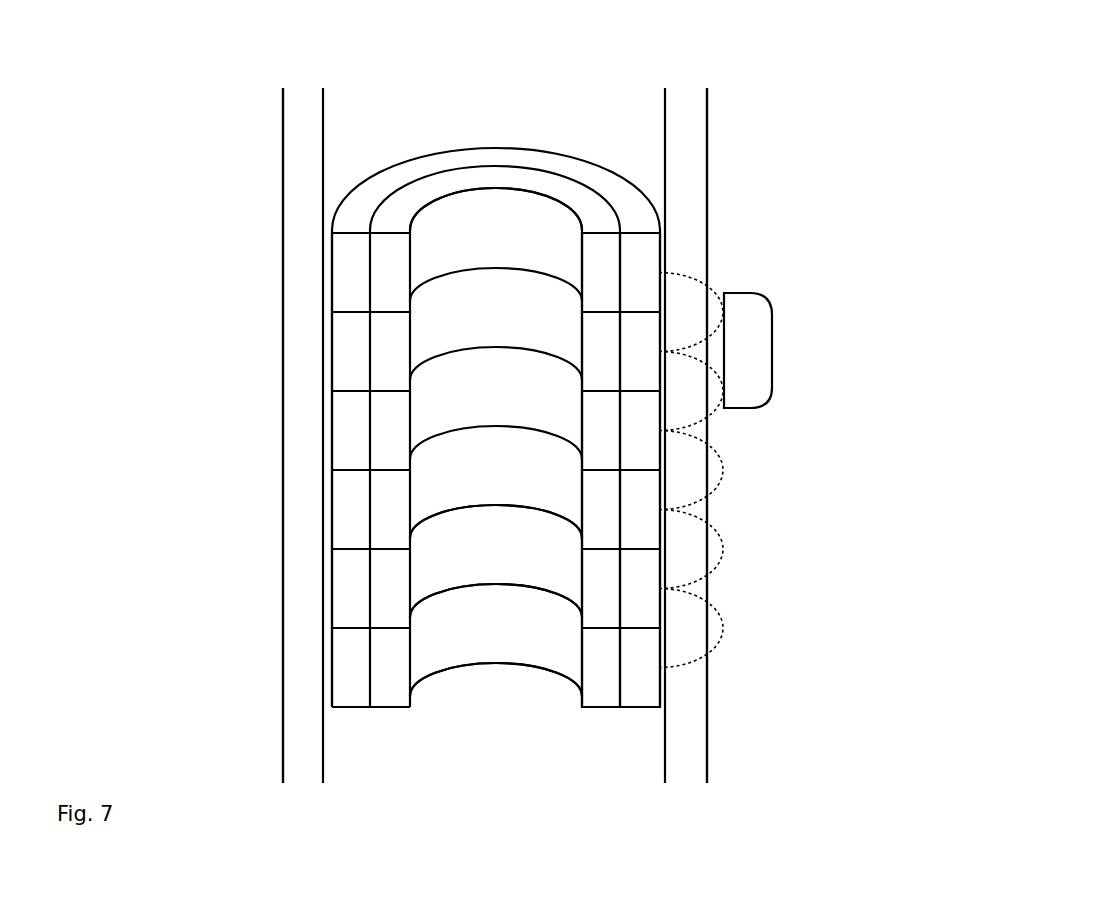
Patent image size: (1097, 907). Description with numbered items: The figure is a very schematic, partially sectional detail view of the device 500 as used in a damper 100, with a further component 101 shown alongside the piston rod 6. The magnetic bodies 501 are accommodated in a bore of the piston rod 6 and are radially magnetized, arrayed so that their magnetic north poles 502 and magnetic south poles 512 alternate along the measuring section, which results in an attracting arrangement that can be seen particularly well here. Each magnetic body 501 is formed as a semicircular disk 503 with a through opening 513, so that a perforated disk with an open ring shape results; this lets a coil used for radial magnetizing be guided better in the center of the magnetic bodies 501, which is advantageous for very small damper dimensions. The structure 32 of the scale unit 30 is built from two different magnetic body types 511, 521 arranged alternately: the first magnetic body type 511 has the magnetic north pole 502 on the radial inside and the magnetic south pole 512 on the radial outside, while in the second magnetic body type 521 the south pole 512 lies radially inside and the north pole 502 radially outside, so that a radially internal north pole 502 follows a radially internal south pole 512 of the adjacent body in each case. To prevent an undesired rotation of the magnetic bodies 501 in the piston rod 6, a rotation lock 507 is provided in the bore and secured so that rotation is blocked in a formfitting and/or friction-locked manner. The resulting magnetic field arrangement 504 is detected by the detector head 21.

The device 500 is at (427, 401).
The scale unit 30 is at (343, 108).
The wall of process chamber 101 is at (280, 124).
The piston rod 6 is at (283, 166).
The through opening 513 is at (475, 222).
The disk 503 is at (340, 272).
The magnetic body 501 is at (373, 475).
The first magnetic body type 511 is at (490, 552).
The second magnetic body type 521 is at (557, 660).
The magnetic south pole 512 is at (598, 695).
The magnetic north pole 502 is at (689, 515).
The rotation lock 507 is at (358, 754).
The damper 100 is at (774, 424).
The structure 32 is at (759, 184).
The magnetic field arrangement 504 is at (715, 280).
The detector head 21 is at (760, 337).